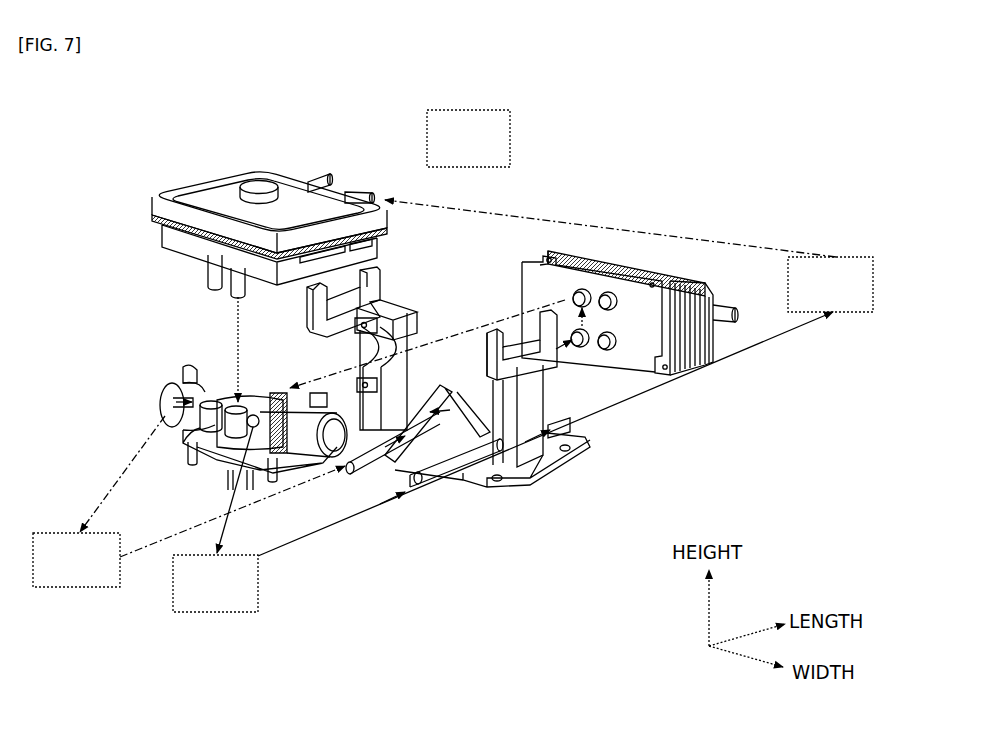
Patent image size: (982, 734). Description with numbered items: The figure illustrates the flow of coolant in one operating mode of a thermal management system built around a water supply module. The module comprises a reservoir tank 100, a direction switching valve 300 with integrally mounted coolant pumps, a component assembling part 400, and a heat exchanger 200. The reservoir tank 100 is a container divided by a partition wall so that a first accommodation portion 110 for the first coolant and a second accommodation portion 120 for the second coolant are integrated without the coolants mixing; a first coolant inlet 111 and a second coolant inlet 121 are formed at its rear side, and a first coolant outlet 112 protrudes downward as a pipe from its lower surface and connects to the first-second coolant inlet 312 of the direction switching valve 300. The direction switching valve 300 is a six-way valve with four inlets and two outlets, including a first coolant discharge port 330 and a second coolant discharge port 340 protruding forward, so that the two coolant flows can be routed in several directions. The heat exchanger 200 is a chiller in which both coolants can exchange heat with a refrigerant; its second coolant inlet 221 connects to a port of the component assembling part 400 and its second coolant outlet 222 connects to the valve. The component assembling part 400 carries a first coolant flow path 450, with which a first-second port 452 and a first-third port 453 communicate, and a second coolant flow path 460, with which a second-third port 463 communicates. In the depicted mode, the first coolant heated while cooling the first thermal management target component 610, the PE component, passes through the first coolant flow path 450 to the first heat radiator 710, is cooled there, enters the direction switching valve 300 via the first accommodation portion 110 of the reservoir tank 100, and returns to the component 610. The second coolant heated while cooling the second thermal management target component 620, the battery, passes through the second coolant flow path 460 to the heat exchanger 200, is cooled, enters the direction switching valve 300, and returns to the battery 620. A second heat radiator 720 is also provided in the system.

The reservoir tank 100 is at (256, 210).
The first accommodation portion 110 is at (268, 208).
The first coolant inlet 111 is at (360, 192).
The first coolant outlet 112 is at (208, 292).
The second accommodation portion 120 is at (210, 187).
The second coolant inlet 121 is at (313, 172).
The heat exchanger 200 is at (600, 295).
The second coolant inlet 221 is at (582, 348).
The second coolant outlet 222 is at (572, 290).
The direction switching valve 300 is at (239, 427).
The first-second coolant inlet 312 is at (247, 392).
The first coolant discharge port 330 is at (280, 392).
The second coolant discharge port 340 is at (185, 392).
The component assembling part 400 is at (495, 422).
The first coolant flow path 450 is at (473, 482).
The first-second port 452 is at (575, 425).
The first-third port 453 is at (430, 490).
The second coolant flow path 460 is at (510, 498).
The second-third port 463 is at (357, 474).
The first thermal management target component 610 is at (213, 613).
The second thermal management target component 620 is at (74, 590).
The first heat radiator 710 is at (843, 257).
The second heat radiator 720 is at (512, 133).